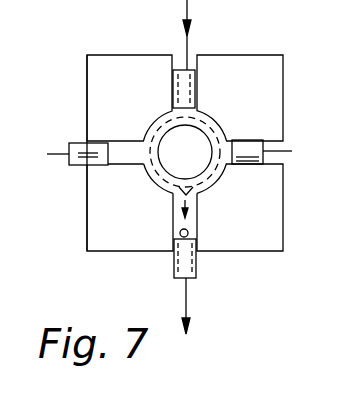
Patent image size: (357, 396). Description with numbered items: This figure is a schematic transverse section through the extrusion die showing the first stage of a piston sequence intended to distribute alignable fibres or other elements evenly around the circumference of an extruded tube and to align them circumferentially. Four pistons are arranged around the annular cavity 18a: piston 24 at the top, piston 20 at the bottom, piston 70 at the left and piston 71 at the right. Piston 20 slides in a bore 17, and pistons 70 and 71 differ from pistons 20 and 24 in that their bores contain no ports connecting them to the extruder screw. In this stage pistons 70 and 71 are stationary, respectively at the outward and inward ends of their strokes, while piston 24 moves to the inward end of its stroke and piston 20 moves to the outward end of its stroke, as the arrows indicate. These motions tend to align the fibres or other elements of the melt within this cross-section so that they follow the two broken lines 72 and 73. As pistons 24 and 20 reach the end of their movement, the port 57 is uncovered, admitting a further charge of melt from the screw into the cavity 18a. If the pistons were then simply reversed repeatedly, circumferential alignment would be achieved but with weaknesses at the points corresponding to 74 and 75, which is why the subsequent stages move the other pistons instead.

The piston 24 is at (178, 90).
The cavity 18a is at (214, 123).
The potential weak point 75 is at (165, 108).
The piston 71 is at (248, 141).
The piston 70 is at (82, 167).
The broken line 72 is at (152, 183).
The bore 17 is at (173, 221).
The broken line 73 is at (222, 190).
The potential weak point 74 is at (202, 204).
The piston 20 is at (172, 263).
The port 57 is at (191, 233).